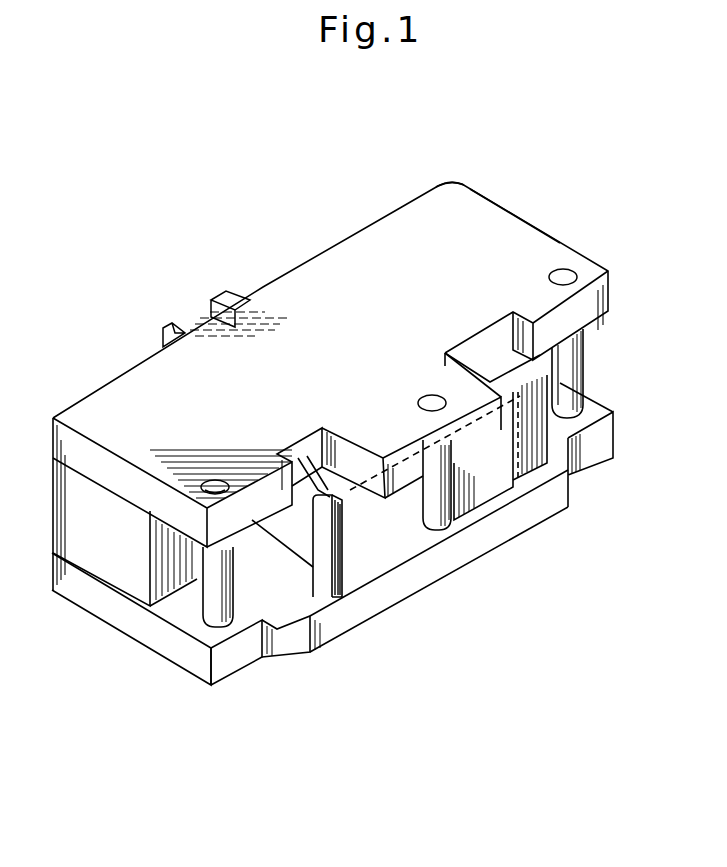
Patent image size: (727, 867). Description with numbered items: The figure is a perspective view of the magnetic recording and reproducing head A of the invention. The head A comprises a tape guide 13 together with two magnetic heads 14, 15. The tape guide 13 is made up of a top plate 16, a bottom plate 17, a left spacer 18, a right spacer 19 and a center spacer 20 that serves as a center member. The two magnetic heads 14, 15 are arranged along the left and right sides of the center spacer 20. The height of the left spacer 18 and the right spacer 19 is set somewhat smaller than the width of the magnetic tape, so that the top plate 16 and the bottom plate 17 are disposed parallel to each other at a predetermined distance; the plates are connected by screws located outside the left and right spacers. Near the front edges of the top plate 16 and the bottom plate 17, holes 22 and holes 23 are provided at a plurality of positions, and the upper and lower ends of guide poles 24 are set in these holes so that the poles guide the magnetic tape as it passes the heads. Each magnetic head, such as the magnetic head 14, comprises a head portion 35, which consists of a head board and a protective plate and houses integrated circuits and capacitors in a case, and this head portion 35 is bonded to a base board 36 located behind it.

The tape guide 13 is at (379, 222).
The magnetic head 14 is at (173, 326).
The magnetic head 15 is at (232, 292).
The top plate 16 is at (464, 200).
The bottom plate 17 is at (385, 602).
The left spacer 18 is at (118, 583).
The right spacer 19 is at (552, 367).
The center spacer 20 is at (496, 483).
The holes 22 is at (556, 279).
The holes 23 is at (220, 658).
The guide poles 24 is at (578, 418).
The head portion 35 is at (331, 596).
The base board 36 is at (303, 548).
The magnetic recording and reproducing head A is at (567, 241).